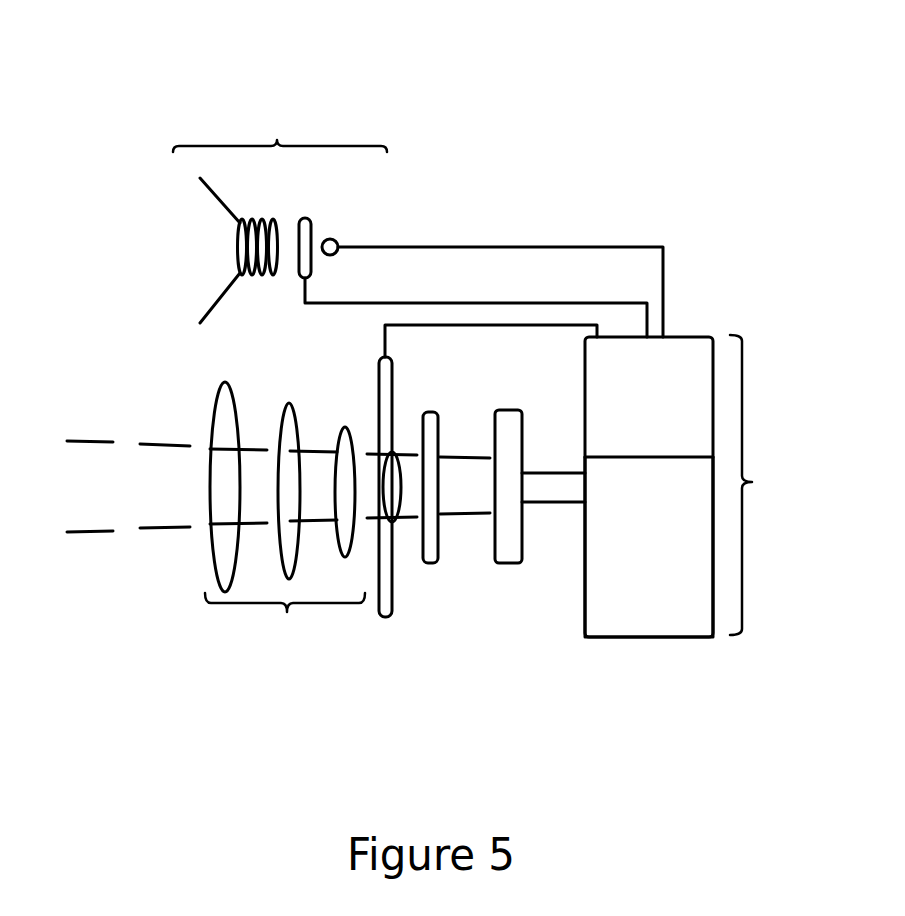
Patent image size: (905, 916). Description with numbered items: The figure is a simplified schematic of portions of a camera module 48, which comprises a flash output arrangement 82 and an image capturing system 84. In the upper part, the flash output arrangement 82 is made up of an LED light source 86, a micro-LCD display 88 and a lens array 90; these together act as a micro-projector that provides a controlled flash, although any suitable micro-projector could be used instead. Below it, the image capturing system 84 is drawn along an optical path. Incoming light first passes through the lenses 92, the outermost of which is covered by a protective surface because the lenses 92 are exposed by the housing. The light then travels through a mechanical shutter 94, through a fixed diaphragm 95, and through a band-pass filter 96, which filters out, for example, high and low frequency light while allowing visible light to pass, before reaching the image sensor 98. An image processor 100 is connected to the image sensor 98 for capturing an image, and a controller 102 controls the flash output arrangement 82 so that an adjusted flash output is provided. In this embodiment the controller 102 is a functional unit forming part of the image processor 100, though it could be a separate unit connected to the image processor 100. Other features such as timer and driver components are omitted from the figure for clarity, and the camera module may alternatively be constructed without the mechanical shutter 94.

The camera module 48 is at (660, 76).
The flash output arrangement 82 is at (280, 125).
The image capturing system 84 is at (697, 486).
The LED light source 86 is at (335, 241).
The micro-LCD display 88 is at (304, 217).
The lens array 90 is at (249, 219).
The lenses 92 is at (285, 523).
The shutter 94 is at (387, 618).
The fixed diaphragm 95 is at (397, 522).
The band-pass filter 96 is at (438, 565).
The image sensor 98 is at (512, 552).
The image processor 100 is at (649, 547).
The controller 102 is at (649, 410).